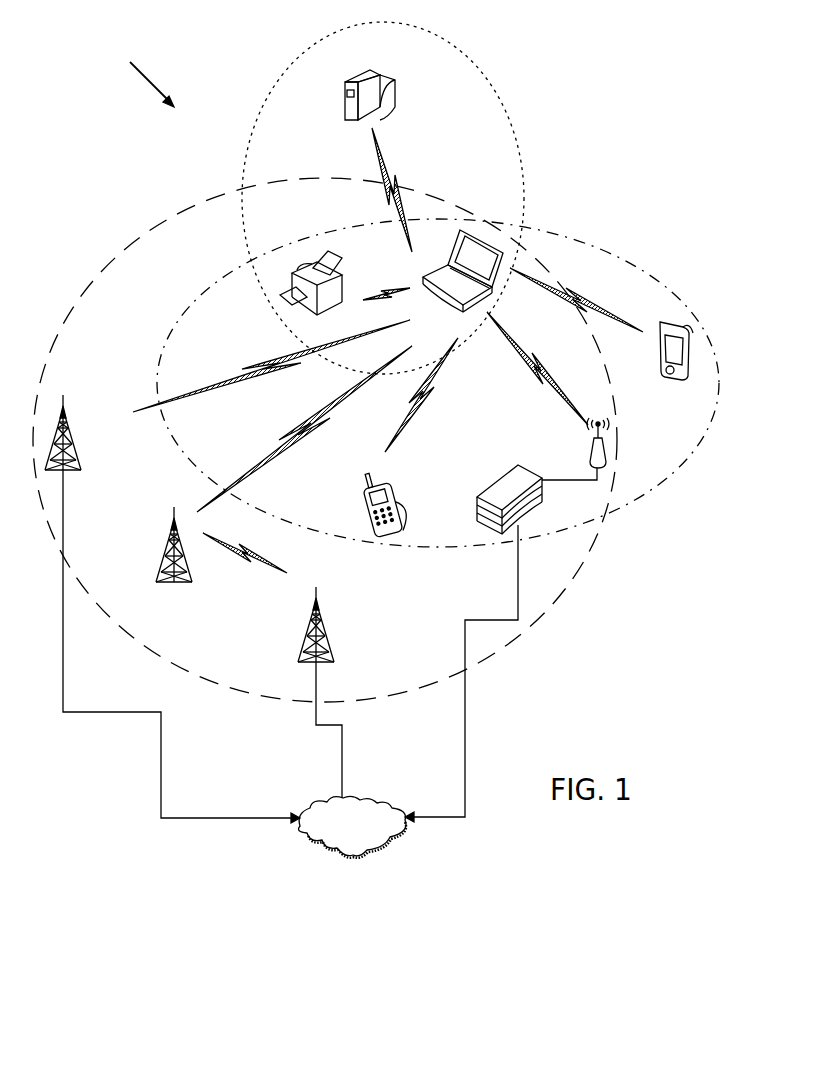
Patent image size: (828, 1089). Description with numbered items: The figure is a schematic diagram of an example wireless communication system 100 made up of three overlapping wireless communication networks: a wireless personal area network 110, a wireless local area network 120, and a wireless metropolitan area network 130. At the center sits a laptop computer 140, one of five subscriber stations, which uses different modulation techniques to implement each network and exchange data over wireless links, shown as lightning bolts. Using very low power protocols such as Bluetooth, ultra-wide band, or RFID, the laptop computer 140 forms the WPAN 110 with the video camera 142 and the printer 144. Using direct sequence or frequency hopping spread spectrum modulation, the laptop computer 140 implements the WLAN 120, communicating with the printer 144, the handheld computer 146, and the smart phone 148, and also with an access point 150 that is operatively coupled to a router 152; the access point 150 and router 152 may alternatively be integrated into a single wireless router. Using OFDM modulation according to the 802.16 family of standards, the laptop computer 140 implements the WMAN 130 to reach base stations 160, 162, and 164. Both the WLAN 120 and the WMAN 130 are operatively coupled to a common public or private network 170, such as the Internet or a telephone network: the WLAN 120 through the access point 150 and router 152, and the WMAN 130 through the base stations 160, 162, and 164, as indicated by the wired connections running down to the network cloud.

The wireless communication system 100 is at (136, 74).
The wireless personal area network (WPAN) 110 is at (290, 50).
The wireless local area network (WLAN) 120 is at (157, 330).
The wireless metropolitan area network (WMAN) 130 is at (152, 203).
The laptop computer 140 is at (457, 228).
The video camera 142 is at (378, 92).
The printer 144 is at (343, 300).
The handheld computer 146 is at (657, 322).
The smart phone 148 is at (366, 485).
The access point (AP) 150 is at (592, 455).
The router 152 is at (498, 492).
The base station 160 is at (97, 441).
The base station 162 is at (170, 543).
The base station 164 is at (312, 627).
The common public or private network 170 is at (362, 846).